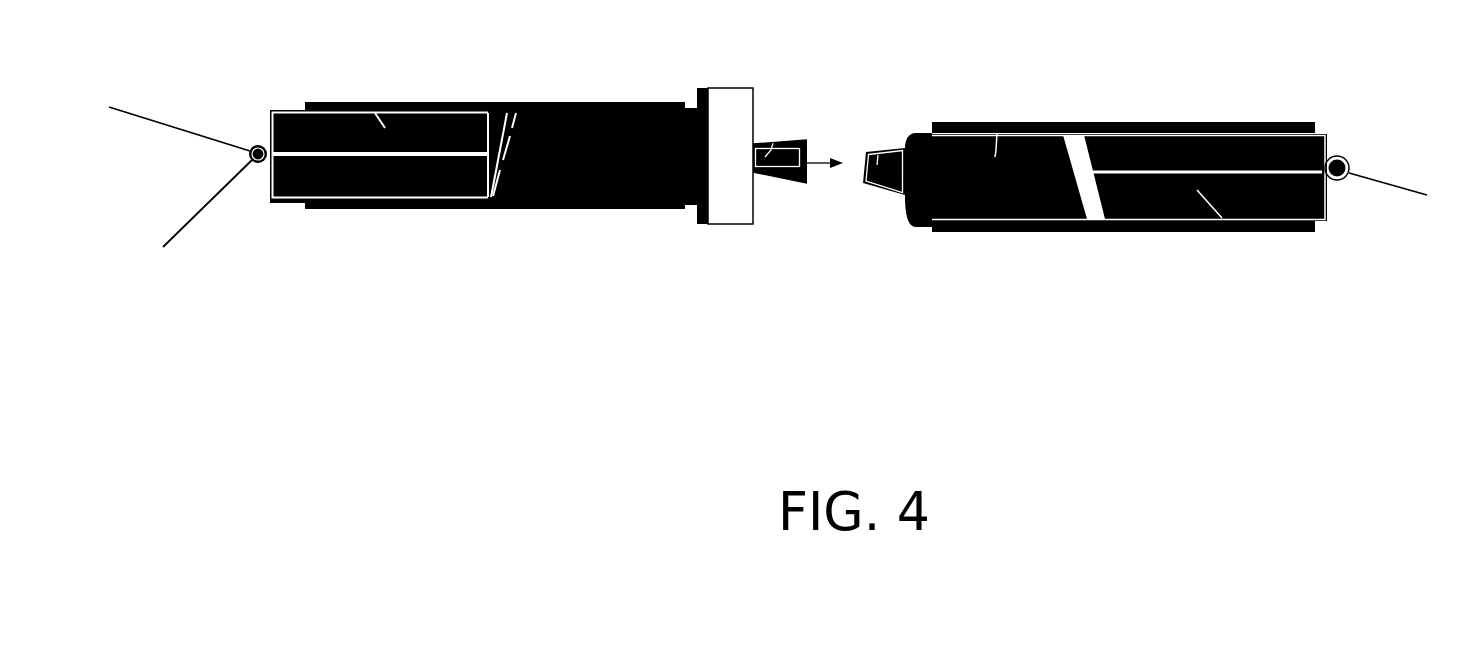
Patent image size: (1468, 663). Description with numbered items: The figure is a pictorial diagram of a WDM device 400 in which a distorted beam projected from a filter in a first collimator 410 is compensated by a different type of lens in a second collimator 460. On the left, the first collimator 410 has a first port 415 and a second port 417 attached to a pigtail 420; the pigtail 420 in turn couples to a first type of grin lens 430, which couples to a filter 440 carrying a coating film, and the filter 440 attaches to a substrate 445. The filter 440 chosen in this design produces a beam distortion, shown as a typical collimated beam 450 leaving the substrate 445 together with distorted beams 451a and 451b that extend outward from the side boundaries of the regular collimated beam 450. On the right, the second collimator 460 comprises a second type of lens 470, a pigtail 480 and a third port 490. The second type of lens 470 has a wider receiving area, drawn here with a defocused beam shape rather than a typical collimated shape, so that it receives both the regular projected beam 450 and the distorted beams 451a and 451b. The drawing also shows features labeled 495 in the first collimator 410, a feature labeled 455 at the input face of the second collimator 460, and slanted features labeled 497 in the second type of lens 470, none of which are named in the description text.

The WDM device 400 is at (282, 434).
The first collimator 410 is at (289, 110).
The first port 415 is at (157, 120).
The second port 417 is at (208, 203).
The pigtail 420 is at (373, 103).
The first type of grin lens 430 is at (595, 102).
The filter 440 is at (700, 88).
The substrate 445 is at (728, 88).
The collimated beam 450 is at (773, 142).
The distorted beam 451a is at (800, 142).
The distorted beam 451b is at (798, 181).
The receptacle latch 455 is at (878, 153).
The second collimator 460 is at (1312, 142).
The second type of lens 470 is at (997, 122).
The pigtail 480 is at (1208, 232).
The third port 490 is at (1405, 188).
The wedge element 495 is at (507, 101).
The slot 497 is at (1080, 122).